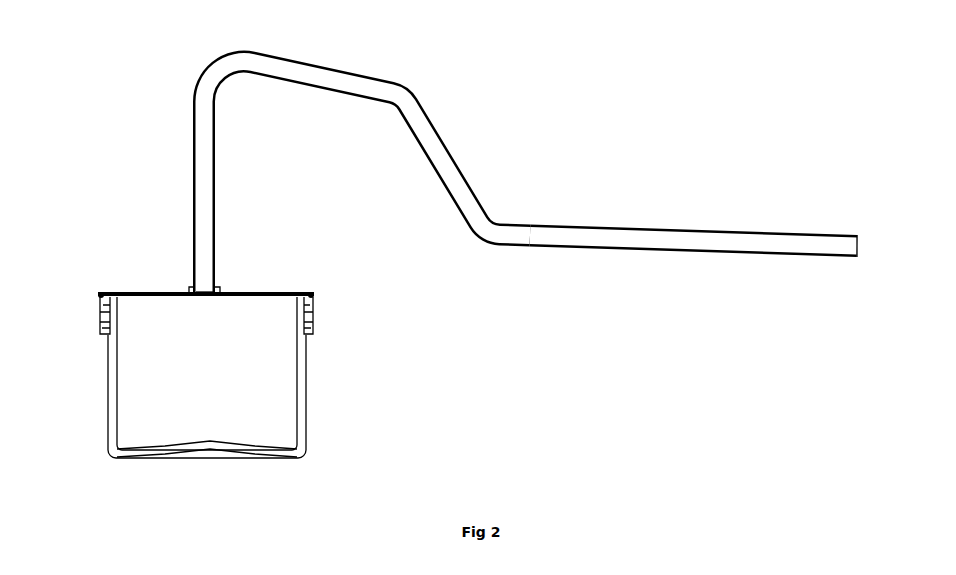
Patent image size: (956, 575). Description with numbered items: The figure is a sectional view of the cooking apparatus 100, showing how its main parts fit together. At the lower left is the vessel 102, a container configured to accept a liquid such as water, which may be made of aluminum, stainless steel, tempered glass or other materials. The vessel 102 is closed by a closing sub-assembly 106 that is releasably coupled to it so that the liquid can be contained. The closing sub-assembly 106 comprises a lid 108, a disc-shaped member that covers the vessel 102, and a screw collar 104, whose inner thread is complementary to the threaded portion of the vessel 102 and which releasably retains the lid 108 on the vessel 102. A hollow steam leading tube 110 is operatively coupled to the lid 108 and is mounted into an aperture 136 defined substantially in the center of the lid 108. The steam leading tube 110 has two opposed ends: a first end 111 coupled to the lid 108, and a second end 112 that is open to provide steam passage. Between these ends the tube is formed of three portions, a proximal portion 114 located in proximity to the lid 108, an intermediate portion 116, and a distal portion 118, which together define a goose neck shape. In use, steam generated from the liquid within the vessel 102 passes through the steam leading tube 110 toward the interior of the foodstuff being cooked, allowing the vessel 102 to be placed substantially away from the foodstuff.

The cooking apparatus 100 is at (141, 80).
The vessel 102 is at (300, 430).
The screw collar 104 is at (102, 313).
The closing sub-assembly 106 is at (246, 283).
The lid 108 is at (120, 292).
The steam leading tube 110 is at (574, 260).
The first end 111 is at (218, 288).
The second end 112 is at (858, 245).
The proximal portion 114 is at (200, 181).
The intermediate portion 116 is at (412, 107).
The distal portion 118 is at (747, 245).
The aperture 136 is at (200, 287).